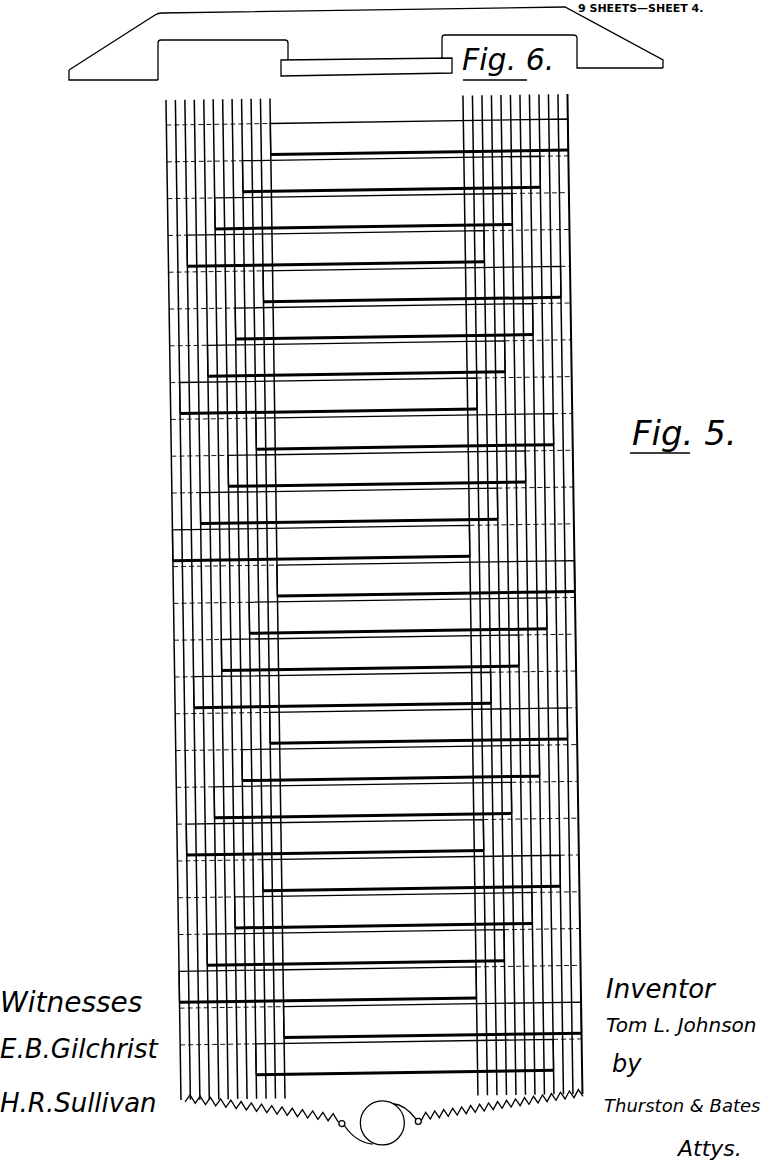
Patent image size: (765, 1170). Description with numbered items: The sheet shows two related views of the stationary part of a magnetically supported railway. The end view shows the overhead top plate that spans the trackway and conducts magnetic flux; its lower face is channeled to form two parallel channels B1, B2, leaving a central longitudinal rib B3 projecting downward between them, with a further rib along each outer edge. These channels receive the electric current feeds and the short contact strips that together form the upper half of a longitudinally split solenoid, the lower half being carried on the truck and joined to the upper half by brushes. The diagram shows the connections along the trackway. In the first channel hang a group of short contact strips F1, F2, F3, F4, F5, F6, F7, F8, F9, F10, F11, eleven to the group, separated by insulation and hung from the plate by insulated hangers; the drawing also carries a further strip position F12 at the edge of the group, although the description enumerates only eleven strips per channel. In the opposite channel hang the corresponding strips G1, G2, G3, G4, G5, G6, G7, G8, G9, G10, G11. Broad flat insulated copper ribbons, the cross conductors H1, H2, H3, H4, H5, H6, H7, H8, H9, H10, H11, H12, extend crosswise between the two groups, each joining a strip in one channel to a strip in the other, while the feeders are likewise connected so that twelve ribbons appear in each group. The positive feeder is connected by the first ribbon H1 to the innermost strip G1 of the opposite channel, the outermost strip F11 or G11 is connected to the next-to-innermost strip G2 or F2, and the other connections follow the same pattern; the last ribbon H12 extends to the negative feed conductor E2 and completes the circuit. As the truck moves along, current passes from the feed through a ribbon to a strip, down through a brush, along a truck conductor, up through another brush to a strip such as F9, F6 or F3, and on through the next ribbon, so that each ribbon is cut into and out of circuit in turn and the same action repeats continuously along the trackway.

In FIG. 6, the channel B1 is at (223, 60).
In FIG. 6, the channel B2 is at (366, 51).
In FIG. 6, the central longitudinal rib B3 is at (493, 47).
In FIG. 5, the feed conductor E2 is at (568, 540).
In FIG. 5, the contact strip F1 is at (270, 100).
In FIG. 5, the contact strip F2 is at (260, 112).
In FIG. 5, the contact strip F3 is at (251, 128).
In FIG. 5, the contact strip F4 is at (242, 146).
In FIG. 5, the contact strip F5 is at (232, 165).
In FIG. 5, the contact strip F6 is at (223, 190).
In FIG. 5, the contact strip F7 is at (213, 215).
In FIG. 5, the contact strip F8 is at (204, 240).
In FIG. 5, the contact strip F9 is at (194, 265).
In FIG. 5, the contact strip F10 is at (185, 278).
In FIG. 5, the contact strip F11 is at (175, 300).
In FIG. 5, the feed wire F12 is at (166, 325).
In FIG. 5, the contact strip G1 is at (463, 100).
In FIG. 5, the contact strip G2 is at (472, 110).
In FIG. 5, the contact strip G3 is at (482, 222).
In FIG. 5, the contact strip G4 is at (492, 232).
In FIG. 5, the contact strip G5 is at (501, 242).
In FIG. 5, the contact strip G6 is at (510, 332).
In FIG. 5, the contact strip G7 is at (520, 347).
In FIG. 5, the contact strip G8 is at (530, 370).
In FIG. 5, the contact strip G9 is at (539, 390).
In FIG. 5, the contact strip G10 is at (548, 472).
In FIG. 5, the contact strip G11 is at (558, 503).
In FIG. 5, the cross conductor H1 is at (376, 763).
In FIG. 5, the cross conductor H2 is at (376, 726).
In FIG. 5, the cross conductor H3 is at (375, 689).
In FIG. 5, the cross conductor H4 is at (375, 652).
In FIG. 5, the cross conductor H5 is at (374, 616).
In FIG. 5, the cross conductor H6 is at (374, 579).
In FIG. 5, the cross conductor H7 is at (373, 542).
In FIG. 5, the cross conductor H8 is at (373, 505).
In FIG. 5, the cross conductor H9 is at (372, 468).
In FIG. 5, the cross conductor H10 is at (371, 432).
In FIG. 5, the cross conductor H11 is at (374, 616).
In FIG. 5, the cross conductor H12 is at (373, 579).